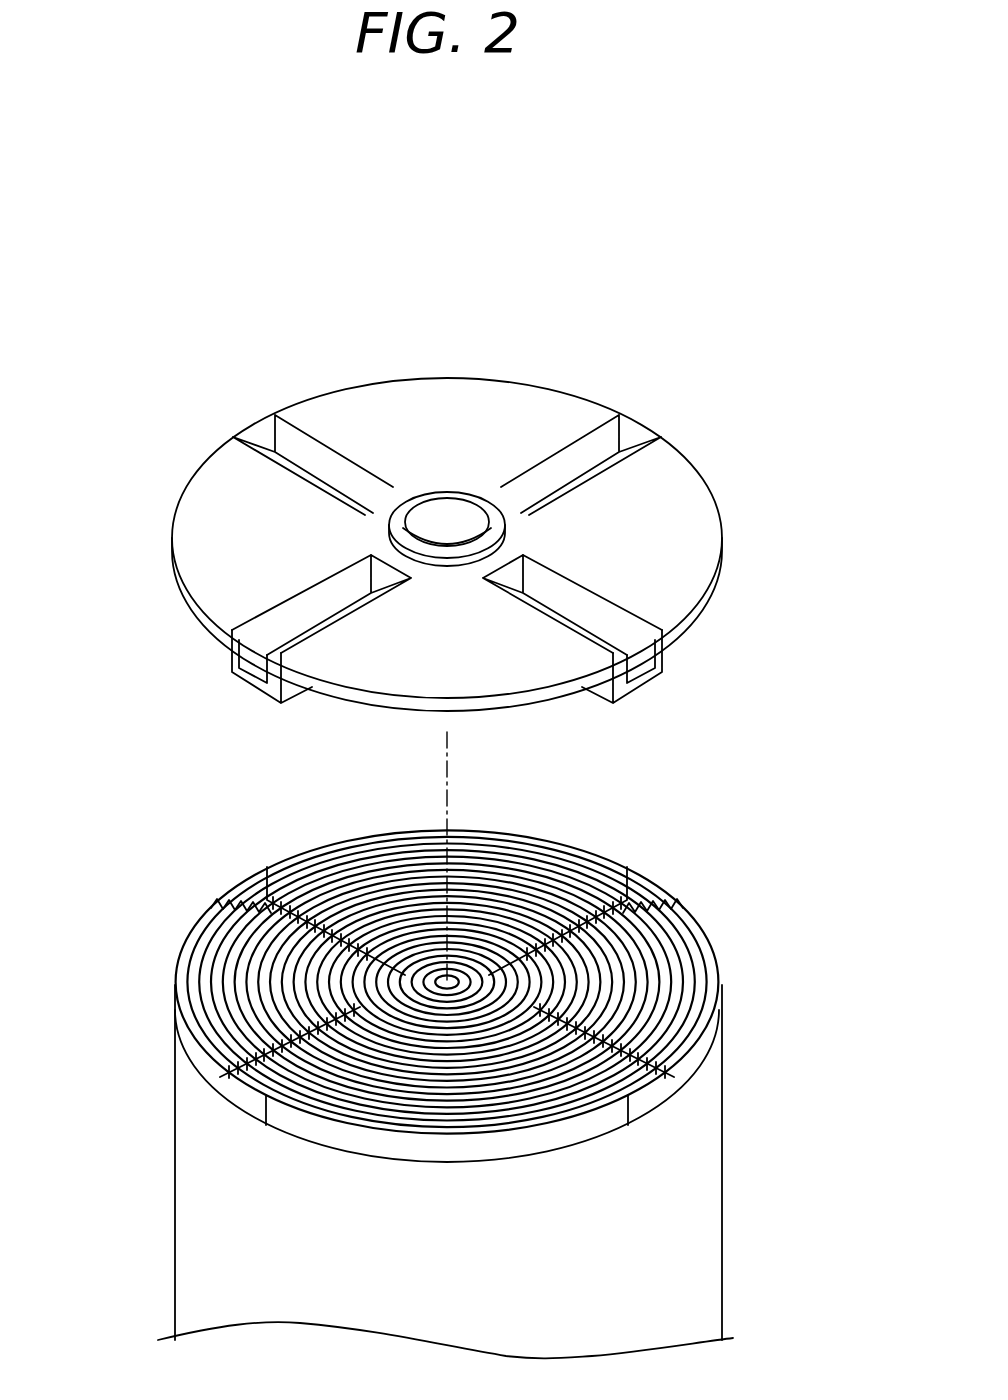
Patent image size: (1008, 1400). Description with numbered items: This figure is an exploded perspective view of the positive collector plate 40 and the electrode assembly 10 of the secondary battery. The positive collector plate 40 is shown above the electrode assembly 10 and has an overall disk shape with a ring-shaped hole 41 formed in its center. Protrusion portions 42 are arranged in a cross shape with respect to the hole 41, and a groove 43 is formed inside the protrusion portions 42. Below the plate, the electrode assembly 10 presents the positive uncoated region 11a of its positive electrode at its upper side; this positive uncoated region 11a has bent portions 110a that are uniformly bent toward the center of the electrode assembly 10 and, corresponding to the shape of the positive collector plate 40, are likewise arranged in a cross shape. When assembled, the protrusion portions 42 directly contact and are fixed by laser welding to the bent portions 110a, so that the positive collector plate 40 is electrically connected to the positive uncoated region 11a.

The electrode assembly 10 is at (742, 1189).
The positive uncoated region 11a is at (702, 987).
The bent portion 110a is at (267, 910).
The positive collector plate 40 is at (689, 412).
The hole 41 is at (411, 515).
The protrusion portions 42 is at (268, 700).
The groove 43 is at (278, 627).